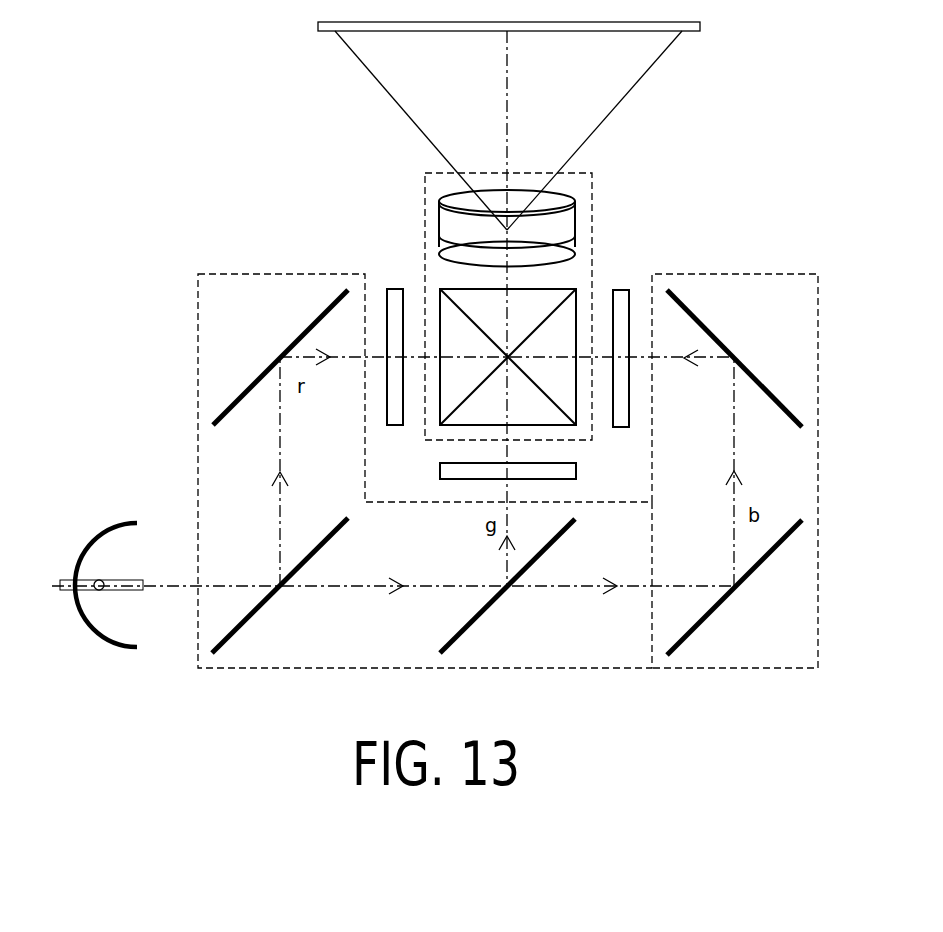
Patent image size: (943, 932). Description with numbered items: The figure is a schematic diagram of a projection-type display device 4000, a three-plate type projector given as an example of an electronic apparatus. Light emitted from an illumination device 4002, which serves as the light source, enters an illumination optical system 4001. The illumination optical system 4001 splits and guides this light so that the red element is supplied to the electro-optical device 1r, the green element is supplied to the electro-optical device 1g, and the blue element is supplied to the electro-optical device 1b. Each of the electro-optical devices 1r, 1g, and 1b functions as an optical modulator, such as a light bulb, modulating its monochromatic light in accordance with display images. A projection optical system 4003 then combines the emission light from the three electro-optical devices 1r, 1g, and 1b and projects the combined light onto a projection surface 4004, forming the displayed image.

The projection-type display device 4000 is at (242, 220).
The illumination optical system 4001 is at (781, 273).
The illumination device 4002 is at (116, 520).
The projection optical system 4003 is at (593, 220).
The projection surface 4004 is at (563, 32).
The electro-optical device 1r is at (387, 412).
The electro-optical device 1g is at (447, 479).
The electro-optical device 1b is at (629, 400).